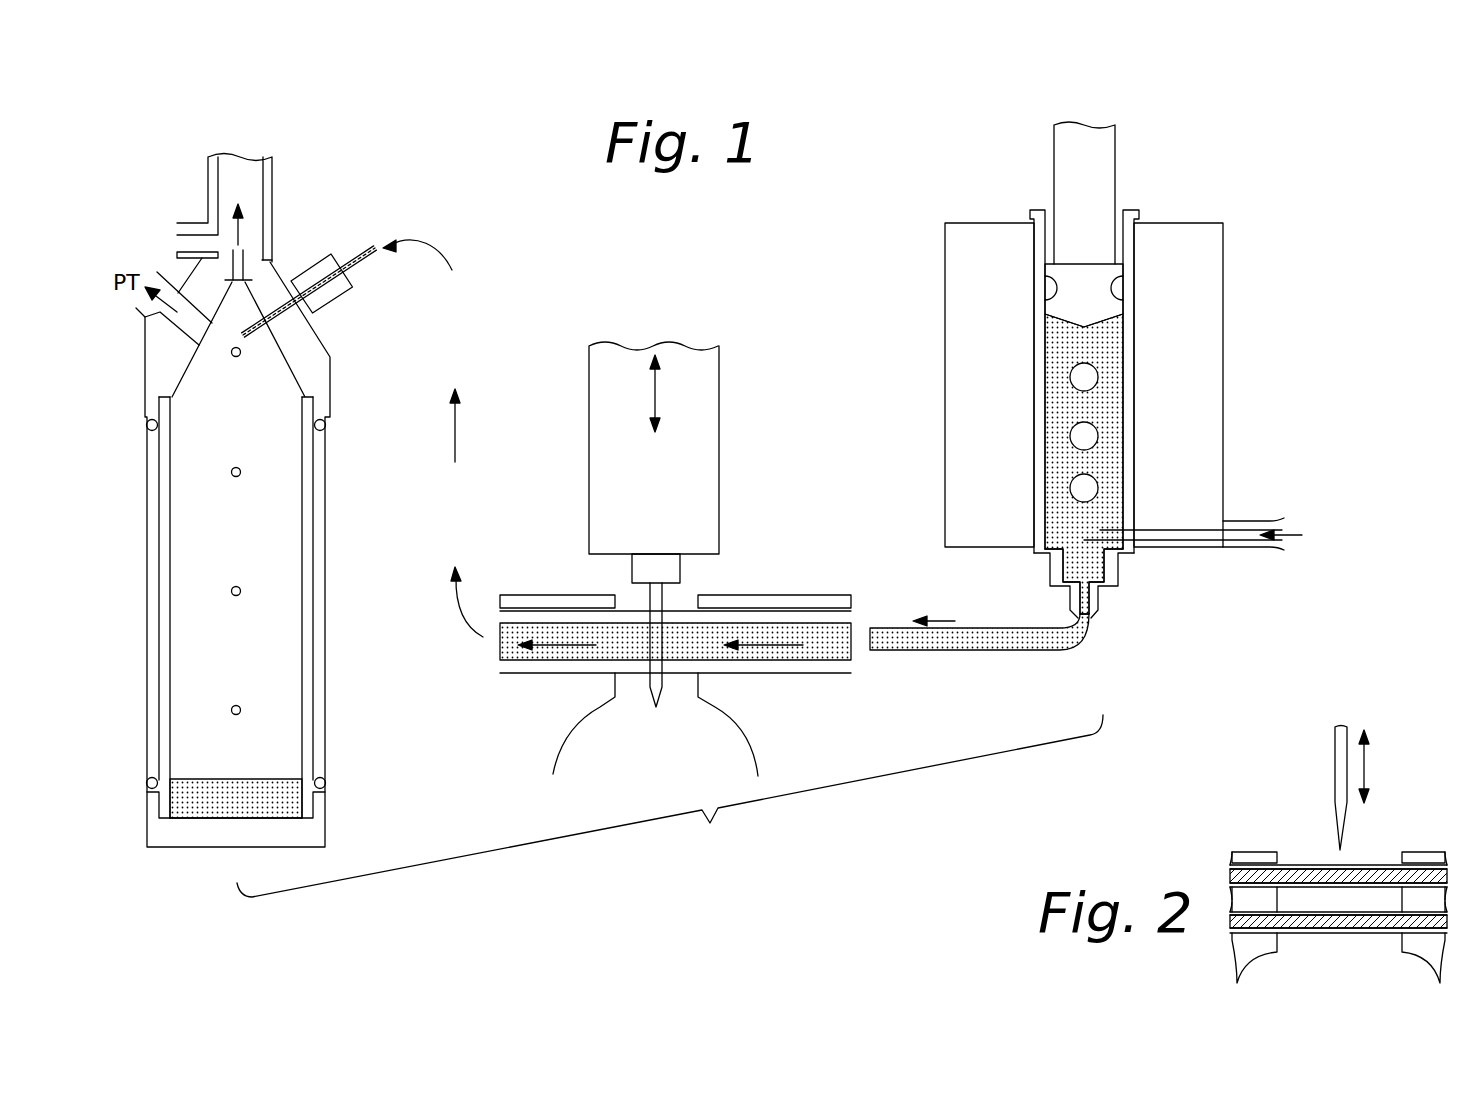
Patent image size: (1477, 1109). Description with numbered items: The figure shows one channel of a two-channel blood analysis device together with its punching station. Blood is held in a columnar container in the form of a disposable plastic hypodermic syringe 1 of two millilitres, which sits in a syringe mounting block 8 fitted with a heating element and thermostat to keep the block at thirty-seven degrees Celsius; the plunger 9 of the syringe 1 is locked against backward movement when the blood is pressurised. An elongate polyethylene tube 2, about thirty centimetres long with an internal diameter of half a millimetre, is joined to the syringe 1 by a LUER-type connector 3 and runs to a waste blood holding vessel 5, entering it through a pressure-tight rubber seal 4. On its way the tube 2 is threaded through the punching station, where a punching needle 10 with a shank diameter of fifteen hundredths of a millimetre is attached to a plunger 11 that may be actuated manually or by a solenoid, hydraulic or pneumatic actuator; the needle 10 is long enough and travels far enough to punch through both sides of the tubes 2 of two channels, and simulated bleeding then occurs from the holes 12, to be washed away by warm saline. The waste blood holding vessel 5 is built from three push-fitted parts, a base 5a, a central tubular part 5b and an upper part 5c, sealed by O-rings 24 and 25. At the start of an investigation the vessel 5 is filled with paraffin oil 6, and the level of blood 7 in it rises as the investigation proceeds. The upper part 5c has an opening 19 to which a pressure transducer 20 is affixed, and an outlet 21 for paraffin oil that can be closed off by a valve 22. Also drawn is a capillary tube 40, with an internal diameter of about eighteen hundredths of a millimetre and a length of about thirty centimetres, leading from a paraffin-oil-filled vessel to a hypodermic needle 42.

The hypodermic syringe 1 is at (1135, 387).
The polyethylene tube 2 is at (378, 255).
The LUER-type connector 3 is at (1112, 590).
The pressure-tight rubber seal 4 is at (338, 306).
The waste blood holding vessel 5 is at (325, 487).
The base 5a is at (325, 835).
The central tubular part 5b is at (325, 622).
The upper part 5c is at (330, 381).
The paraffin oil 6 is at (292, 575).
The blood 7 is at (182, 800).
The syringe mounting block 8 is at (1223, 282).
The plunger 9 is at (1115, 160).
The punching needle 10 is at (650, 590).
The plunger 11 is at (720, 443).
The holes 12 is at (685, 612).
The opening 19 is at (180, 332).
The pressure transducer 20 is at (140, 312).
The outlet 21 is at (245, 244).
The valve 22 is at (250, 270).
The O-ring 24 is at (328, 425).
The O-ring 25 is at (328, 783).
The capillary tube 40 is at (1268, 550).
The hypodermic needle 42 is at (1196, 543).